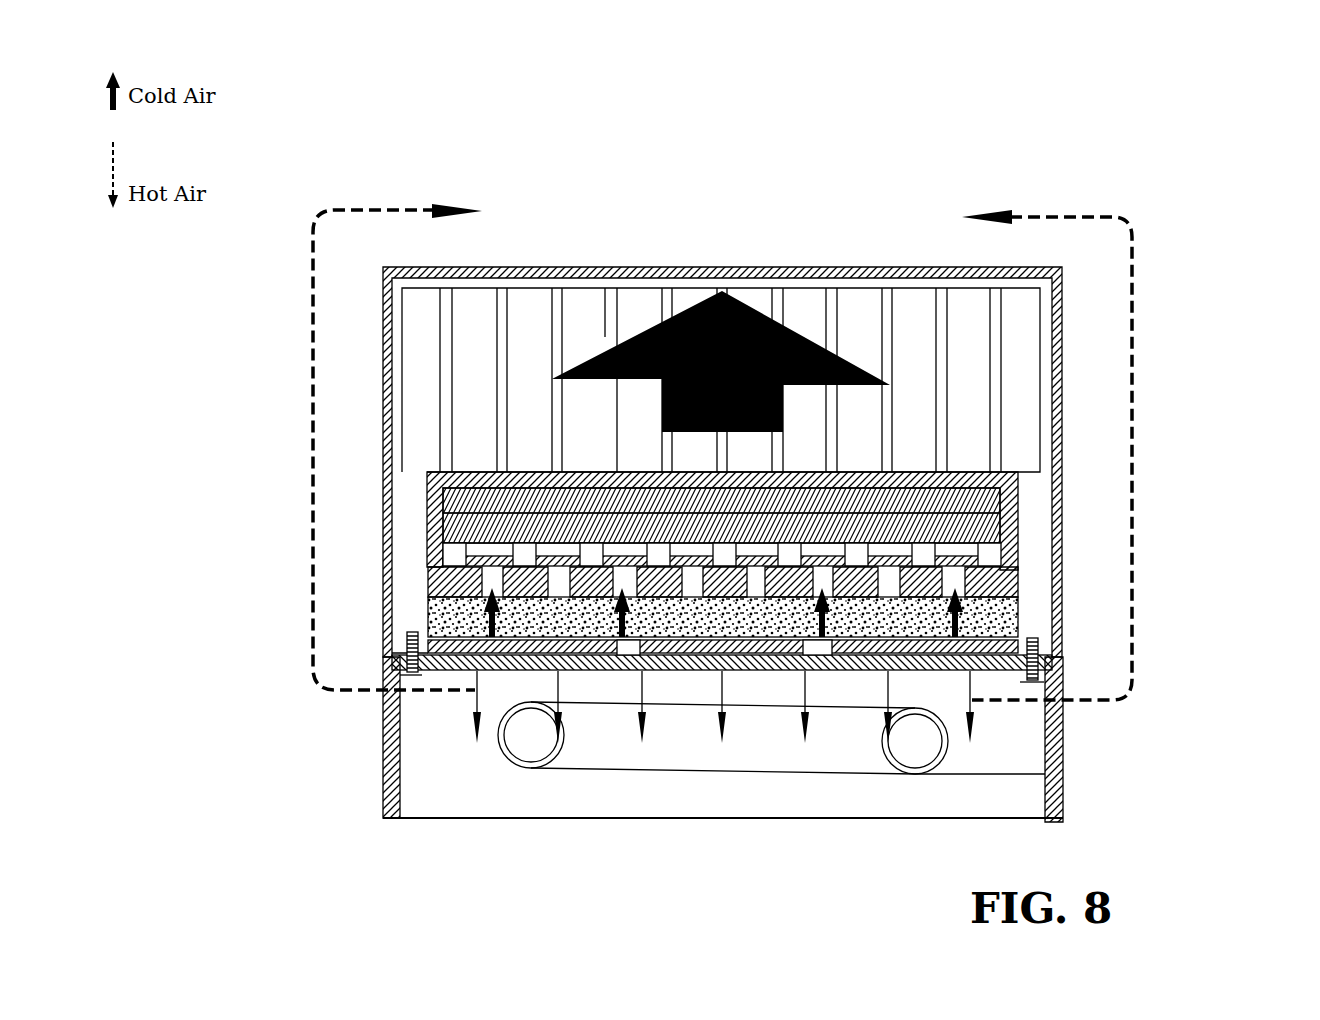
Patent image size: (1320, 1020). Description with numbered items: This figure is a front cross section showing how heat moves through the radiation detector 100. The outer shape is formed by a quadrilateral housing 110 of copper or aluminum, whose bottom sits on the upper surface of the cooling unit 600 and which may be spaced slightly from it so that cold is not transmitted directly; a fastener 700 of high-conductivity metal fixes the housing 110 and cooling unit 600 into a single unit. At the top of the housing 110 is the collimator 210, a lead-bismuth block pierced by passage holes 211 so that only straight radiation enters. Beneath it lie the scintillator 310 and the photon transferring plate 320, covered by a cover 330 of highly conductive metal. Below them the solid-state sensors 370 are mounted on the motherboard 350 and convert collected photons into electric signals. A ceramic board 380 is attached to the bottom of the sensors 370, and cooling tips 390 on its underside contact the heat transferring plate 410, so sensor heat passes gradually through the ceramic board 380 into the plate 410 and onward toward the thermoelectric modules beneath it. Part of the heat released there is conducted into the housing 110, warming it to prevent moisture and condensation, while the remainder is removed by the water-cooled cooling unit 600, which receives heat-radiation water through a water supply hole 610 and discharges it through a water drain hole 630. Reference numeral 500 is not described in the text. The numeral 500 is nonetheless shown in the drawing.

The radiation detector 100 is at (811, 223).
The housing 110 is at (1063, 331).
The collimator 210 is at (430, 397).
The passage holes 211 is at (997, 302).
The scintillator 310 is at (428, 504).
The photon transferring plate 320 is at (440, 538).
The cover 330 is at (1018, 486).
The motherboard 350 is at (1018, 588).
The solid-state sensors 370 is at (1000, 557).
The ceramic board 380 is at (445, 556).
The cooling tips 390 is at (440, 580).
The heat transferring plate 410 is at (428, 617).
The base plate 500 is at (1063, 655).
The cooling unit 600 is at (1063, 727).
The water supply hole 610 is at (498, 737).
The water drain hole 630 is at (1063, 763).
The fastener 700 is at (405, 660).